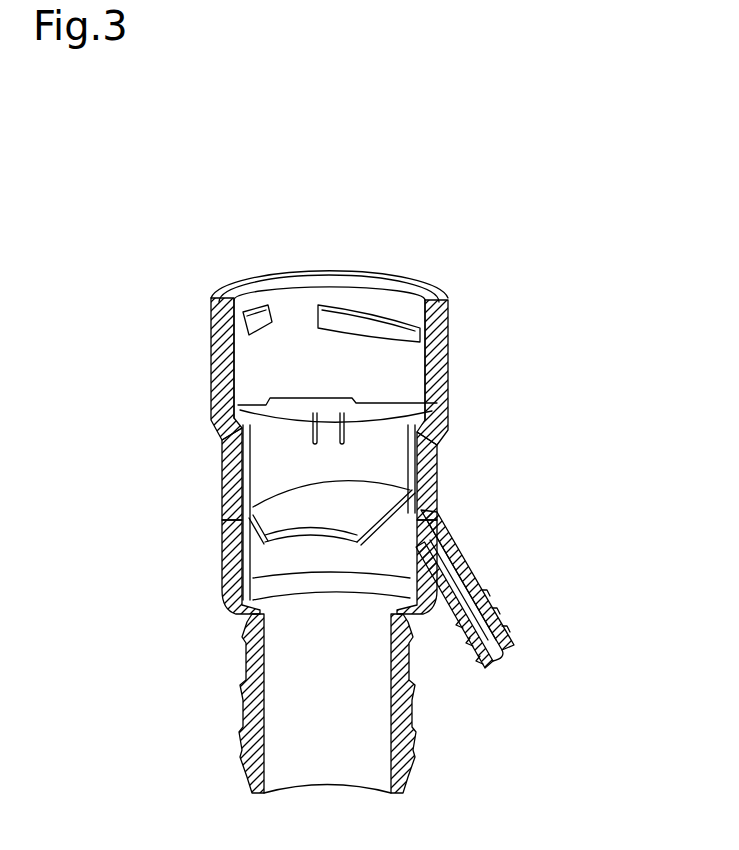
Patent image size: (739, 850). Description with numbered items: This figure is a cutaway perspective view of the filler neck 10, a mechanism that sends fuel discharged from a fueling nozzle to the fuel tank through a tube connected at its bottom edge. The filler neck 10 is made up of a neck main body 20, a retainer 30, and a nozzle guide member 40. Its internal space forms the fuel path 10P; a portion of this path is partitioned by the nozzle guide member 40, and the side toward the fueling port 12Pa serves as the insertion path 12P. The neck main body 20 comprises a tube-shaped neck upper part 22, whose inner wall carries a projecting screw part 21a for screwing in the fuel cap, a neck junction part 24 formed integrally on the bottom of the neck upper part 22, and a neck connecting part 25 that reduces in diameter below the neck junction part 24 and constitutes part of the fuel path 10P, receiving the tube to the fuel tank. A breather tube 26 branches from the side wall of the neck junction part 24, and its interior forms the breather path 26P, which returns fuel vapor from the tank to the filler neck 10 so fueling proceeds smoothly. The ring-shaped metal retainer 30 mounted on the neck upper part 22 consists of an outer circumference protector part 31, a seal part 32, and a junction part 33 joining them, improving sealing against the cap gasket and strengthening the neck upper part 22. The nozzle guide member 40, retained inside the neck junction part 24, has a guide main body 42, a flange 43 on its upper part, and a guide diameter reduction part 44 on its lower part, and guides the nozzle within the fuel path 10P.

The filler neck 10 is at (131, 238).
The retainer 30 is at (522, 228).
The seal part 32 is at (425, 298).
The junction part 33 is at (445, 293).
The outer circumference protector part 31 is at (447, 328).
The fueling port 12Pa is at (297, 298).
The screw part 21a is at (367, 318).
The insertion path 12P is at (345, 376).
The nozzle guide member 40 is at (549, 380).
The flange 43 is at (437, 400).
The guide main body 42 is at (415, 452).
The guide diameter reduction part 44 is at (420, 517).
The neck main body 20 is at (118, 382).
The neck upper part 22 is at (211, 403).
The neck junction part 24 is at (222, 530).
The neck connecting part 25 is at (244, 655).
The fuel path 10P is at (345, 637).
The breather tube 26 is at (470, 560).
The breather path 26P is at (476, 620).